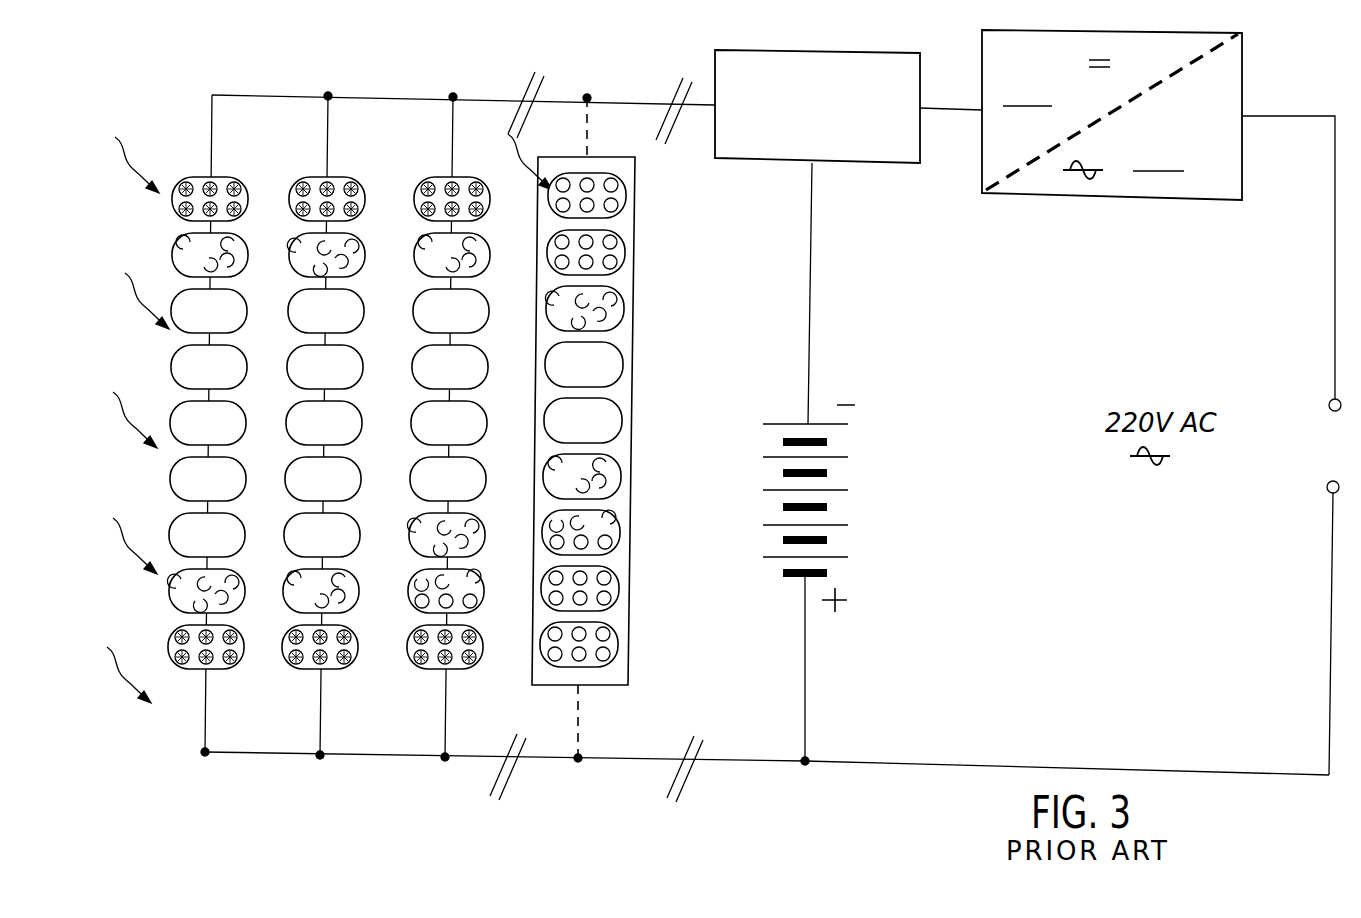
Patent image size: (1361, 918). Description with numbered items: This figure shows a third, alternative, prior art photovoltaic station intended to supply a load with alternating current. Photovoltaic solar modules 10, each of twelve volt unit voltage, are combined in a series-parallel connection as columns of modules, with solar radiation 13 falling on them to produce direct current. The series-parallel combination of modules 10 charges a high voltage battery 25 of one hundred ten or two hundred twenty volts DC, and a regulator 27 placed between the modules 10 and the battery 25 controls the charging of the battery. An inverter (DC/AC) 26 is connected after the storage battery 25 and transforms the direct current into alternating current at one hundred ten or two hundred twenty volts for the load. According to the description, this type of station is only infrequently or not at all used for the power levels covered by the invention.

The solar radiation 13 is at (143, 150).
The photovoltaic solar module 10 is at (247, 193).
The regulator 27 is at (756, 56).
The inverter (DC/AC) 26 is at (1243, 47).
The high voltage battery 25 is at (852, 500).